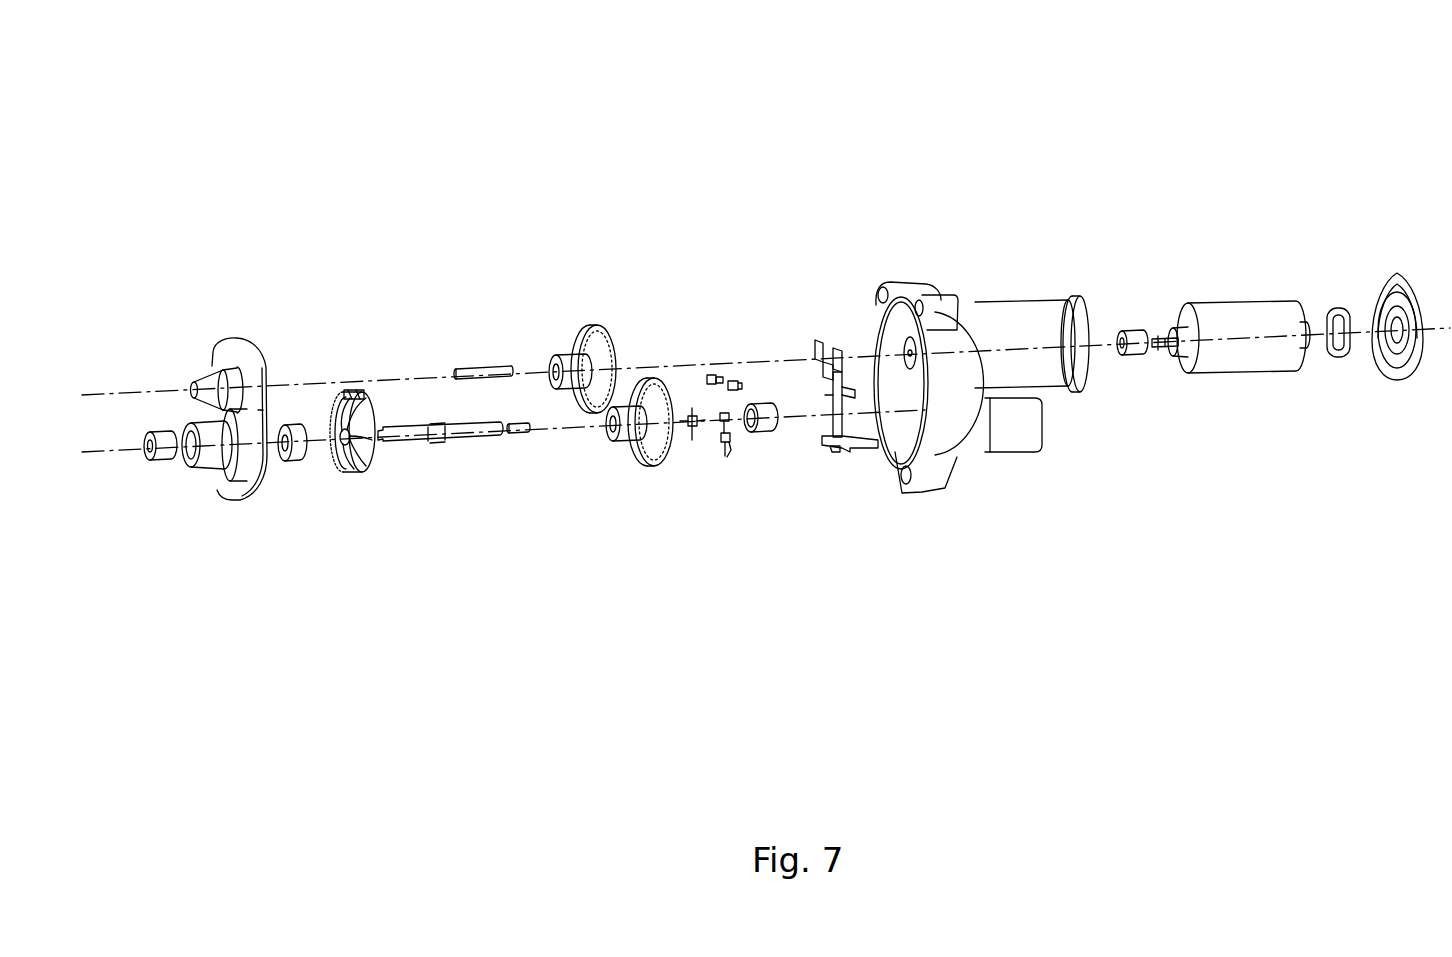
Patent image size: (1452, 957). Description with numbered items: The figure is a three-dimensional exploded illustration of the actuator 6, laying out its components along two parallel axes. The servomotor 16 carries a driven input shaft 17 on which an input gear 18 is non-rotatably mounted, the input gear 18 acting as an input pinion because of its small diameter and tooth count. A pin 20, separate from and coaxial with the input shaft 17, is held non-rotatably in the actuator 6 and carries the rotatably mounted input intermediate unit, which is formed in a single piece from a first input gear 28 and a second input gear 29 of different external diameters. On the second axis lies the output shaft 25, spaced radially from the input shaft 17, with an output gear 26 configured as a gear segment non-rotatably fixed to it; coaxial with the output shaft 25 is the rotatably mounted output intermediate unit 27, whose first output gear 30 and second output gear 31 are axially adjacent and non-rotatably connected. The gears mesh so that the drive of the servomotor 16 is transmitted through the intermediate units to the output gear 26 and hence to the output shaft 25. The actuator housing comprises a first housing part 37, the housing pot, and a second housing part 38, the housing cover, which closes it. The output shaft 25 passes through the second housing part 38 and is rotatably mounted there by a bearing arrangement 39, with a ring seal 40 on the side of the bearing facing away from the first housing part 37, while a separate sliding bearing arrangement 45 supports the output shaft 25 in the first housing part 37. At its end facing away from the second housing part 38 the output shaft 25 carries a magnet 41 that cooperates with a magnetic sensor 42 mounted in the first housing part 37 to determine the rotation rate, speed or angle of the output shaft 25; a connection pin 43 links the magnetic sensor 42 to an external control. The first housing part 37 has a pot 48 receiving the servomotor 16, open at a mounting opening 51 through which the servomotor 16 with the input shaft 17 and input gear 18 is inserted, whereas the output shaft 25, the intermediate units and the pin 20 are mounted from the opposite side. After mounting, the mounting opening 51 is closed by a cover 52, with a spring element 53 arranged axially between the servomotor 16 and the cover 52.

The actuator 6 is at (1358, 170).
The servomotor 16 is at (1237, 291).
The input shaft 17 is at (1168, 350).
The input gear 18 is at (1130, 329).
The pin 20 is at (478, 368).
The output shaft 25 is at (412, 446).
The output gear 26 is at (350, 391).
The output intermediate unit 27 is at (655, 328).
The first input gear 28 is at (597, 326).
The second input gear 29 is at (560, 356).
The first output gear 30 is at (668, 456).
The second output gear 31 is at (620, 444).
The first housing part 37 is at (898, 270).
The second housing part 38 is at (247, 337).
The bearing arrangement 39 is at (296, 466).
The ring seal 40 is at (163, 463).
The magnet 41 is at (521, 436).
The magnetic sensor 42 is at (714, 421).
The connection pin 43 is at (860, 452).
The bearing arrangement 45 is at (762, 434).
The pot 48 is at (1012, 289).
The mounting opening 51 is at (1084, 299).
The cover 52 is at (1408, 381).
The spring element 53 is at (1345, 360).